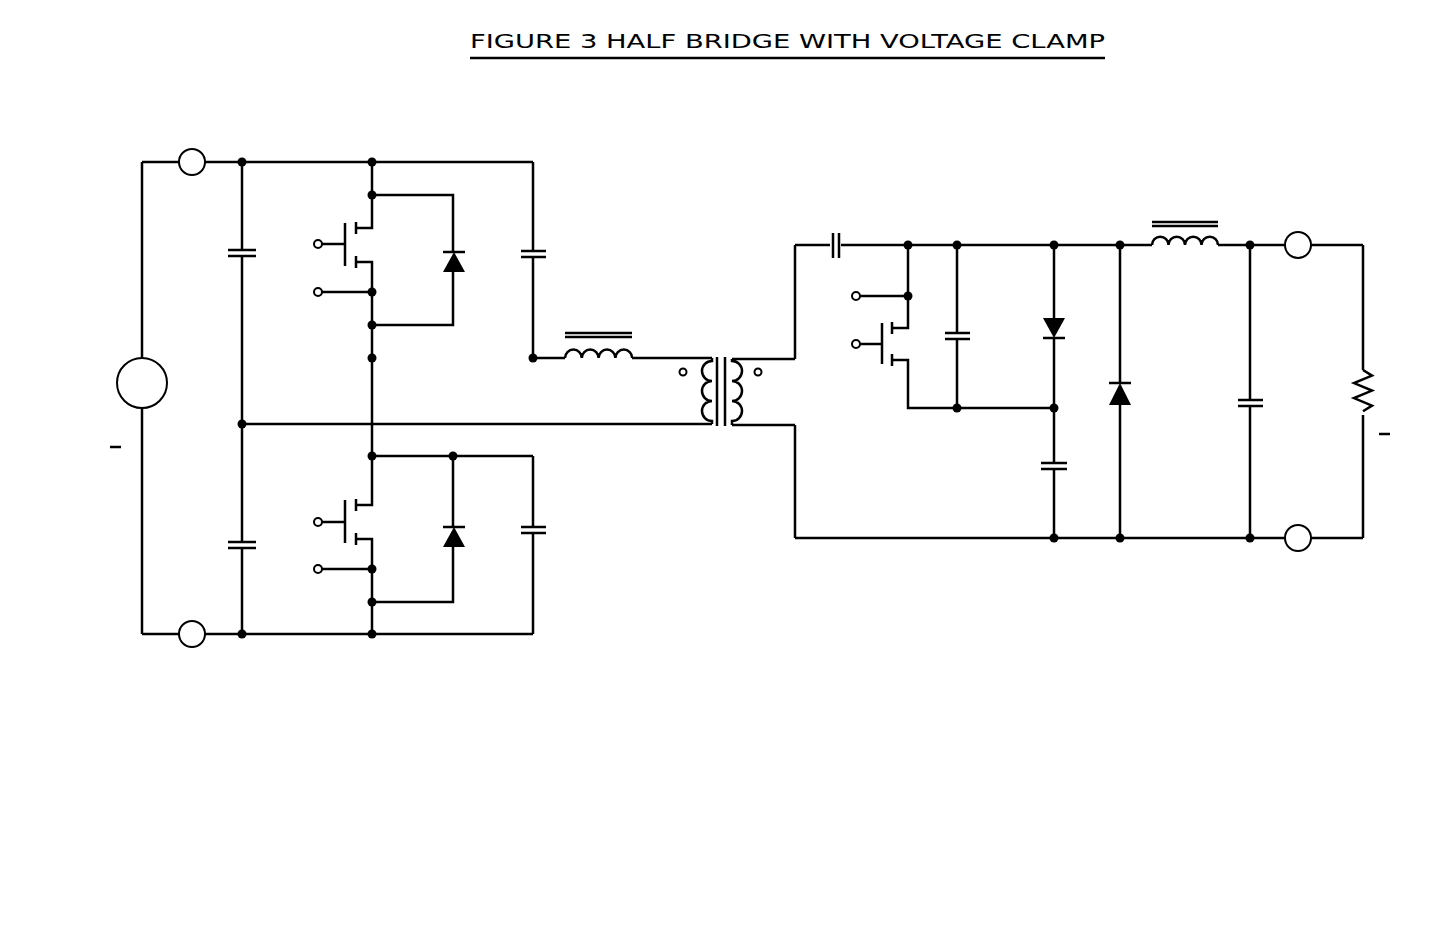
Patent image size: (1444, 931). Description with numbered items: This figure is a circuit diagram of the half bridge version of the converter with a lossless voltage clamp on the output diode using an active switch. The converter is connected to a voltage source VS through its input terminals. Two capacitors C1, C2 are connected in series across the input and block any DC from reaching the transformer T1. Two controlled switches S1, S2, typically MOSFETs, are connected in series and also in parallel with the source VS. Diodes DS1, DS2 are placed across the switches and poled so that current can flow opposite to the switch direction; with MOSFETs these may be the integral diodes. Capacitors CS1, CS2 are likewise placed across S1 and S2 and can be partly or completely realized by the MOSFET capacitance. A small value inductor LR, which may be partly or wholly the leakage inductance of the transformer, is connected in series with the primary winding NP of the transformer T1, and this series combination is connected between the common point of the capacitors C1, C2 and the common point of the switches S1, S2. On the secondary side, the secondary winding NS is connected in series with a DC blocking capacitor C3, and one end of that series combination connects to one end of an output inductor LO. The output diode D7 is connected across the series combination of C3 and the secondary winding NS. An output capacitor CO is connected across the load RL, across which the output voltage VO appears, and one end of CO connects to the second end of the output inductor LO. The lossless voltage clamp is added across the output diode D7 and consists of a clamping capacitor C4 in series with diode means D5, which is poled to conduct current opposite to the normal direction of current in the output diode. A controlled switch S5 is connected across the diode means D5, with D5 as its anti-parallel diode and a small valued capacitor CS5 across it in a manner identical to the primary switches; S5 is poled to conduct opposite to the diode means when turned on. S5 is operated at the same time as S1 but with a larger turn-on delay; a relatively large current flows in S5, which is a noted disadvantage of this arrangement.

The voltage source VS is at (122, 378).
The capacitor C1 is at (229, 293).
The capacitor C2 is at (229, 529).
The controlled switch S1 is at (334, 277).
The controlled switch S2 is at (325, 543).
The diode DS1 is at (438, 260).
The diode DS2 is at (452, 527).
The capacitor CS1 is at (553, 262).
The capacitor CS2 is at (553, 545).
The small value inductor LR is at (622, 333).
The transformer T1 is at (728, 377).
The primary winding NP is at (668, 386).
The secondary winding NS is at (781, 386).
The DC blocking capacitor C3 is at (817, 231).
The controlled switch S5 is at (944, 326).
The small valued capacitor CS5 is at (977, 329).
The diode means D5 is at (1071, 329).
The clamping capacitor C4 is at (1045, 473).
The output diode D7 is at (1144, 391).
The output inductor LO is at (1185, 213).
The output capacitor CO is at (1266, 391).
The load RL is at (1344, 390).
The output voltage VO is at (1400, 382).